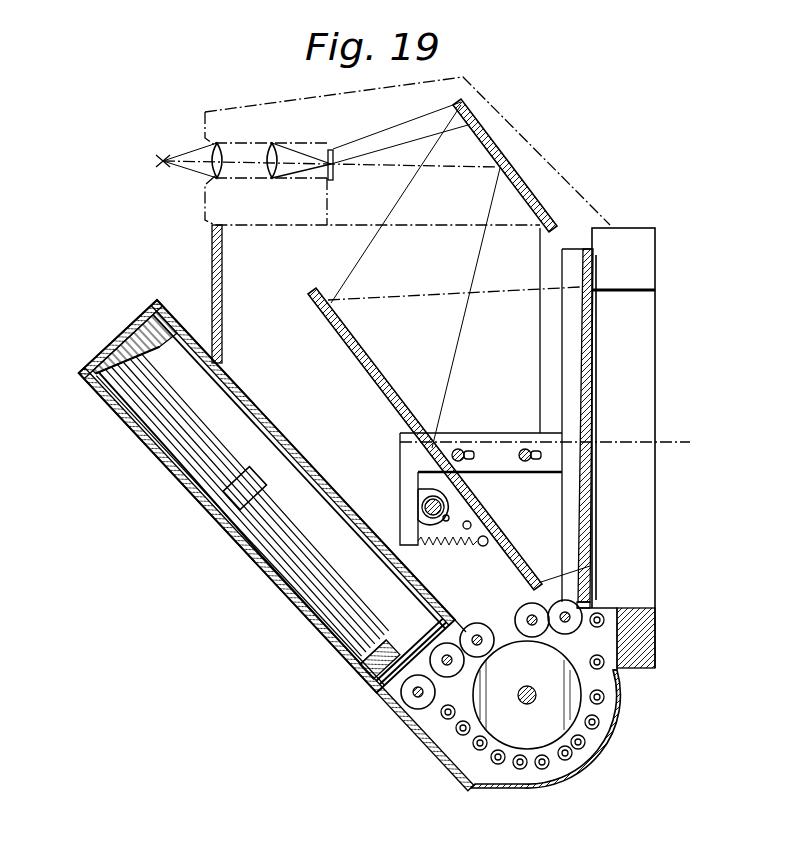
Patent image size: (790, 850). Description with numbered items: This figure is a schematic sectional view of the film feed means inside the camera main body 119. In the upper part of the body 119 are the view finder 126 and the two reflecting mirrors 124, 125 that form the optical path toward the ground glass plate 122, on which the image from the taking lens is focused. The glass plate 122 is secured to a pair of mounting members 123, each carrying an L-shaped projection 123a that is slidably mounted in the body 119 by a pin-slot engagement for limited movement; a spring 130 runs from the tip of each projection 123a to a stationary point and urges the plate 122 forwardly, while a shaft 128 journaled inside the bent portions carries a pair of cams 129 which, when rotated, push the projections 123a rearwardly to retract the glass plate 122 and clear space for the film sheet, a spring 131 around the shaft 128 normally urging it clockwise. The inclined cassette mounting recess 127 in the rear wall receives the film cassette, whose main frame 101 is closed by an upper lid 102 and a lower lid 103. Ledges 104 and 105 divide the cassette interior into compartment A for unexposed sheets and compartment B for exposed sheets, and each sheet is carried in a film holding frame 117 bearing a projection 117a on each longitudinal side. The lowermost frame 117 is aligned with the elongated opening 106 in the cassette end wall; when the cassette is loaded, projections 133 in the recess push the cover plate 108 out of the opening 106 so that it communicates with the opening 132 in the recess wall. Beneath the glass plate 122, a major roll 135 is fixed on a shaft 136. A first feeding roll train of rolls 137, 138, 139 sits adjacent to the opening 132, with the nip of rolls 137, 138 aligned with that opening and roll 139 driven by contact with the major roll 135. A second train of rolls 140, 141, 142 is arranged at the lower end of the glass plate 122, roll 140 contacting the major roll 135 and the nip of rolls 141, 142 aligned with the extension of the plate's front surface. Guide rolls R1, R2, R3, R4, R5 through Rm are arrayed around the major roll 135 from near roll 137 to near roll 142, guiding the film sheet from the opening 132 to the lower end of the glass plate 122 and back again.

The main frame 101 is at (150, 322).
The upper lid 102 is at (213, 389).
The lower lid 103 is at (152, 456).
The ledge 104 is at (354, 648).
The ledge 105 is at (98, 366).
The elongated opening 106 is at (379, 674).
The cover plate 108 is at (391, 697).
The film holding frame 117 is at (235, 416).
The projection 117a is at (265, 470).
The main body 119 is at (216, 244).
The ground glass plate 122 is at (588, 308).
The mounting member 123 is at (578, 352).
The L-shaped projection 123a is at (500, 460).
The reflecting mirror 124 is at (318, 322).
The reflecting mirror 125 is at (505, 186).
The view finder 126 is at (270, 145).
The cassette mounting recess 127 is at (300, 458).
The shaft 128 is at (420, 500).
The cam 129 is at (420, 540).
The spring 130 is at (466, 538).
The spring 131 is at (490, 521).
The opening 132 is at (396, 718).
The projection 133 is at (425, 592).
The major roll 135 is at (613, 705).
The shaft 136 is at (530, 705).
The feeding roll 137 is at (412, 706).
The feeding roll 138 is at (572, 678).
The feeding roll 139 is at (478, 636).
The feeding roll 140 is at (530, 615).
The feeding roll 141 is at (585, 605).
The feeding roll 142 is at (615, 622).
The compartment A is at (185, 352).
The compartment B is at (140, 405).
The guide roll R1 is at (444, 716).
The guide roll R2 is at (462, 732).
The guide roll R3 is at (478, 747).
The guide roll R4 is at (496, 761).
The guide roll R5 is at (518, 766).
The guide roll Rm is at (618, 680).